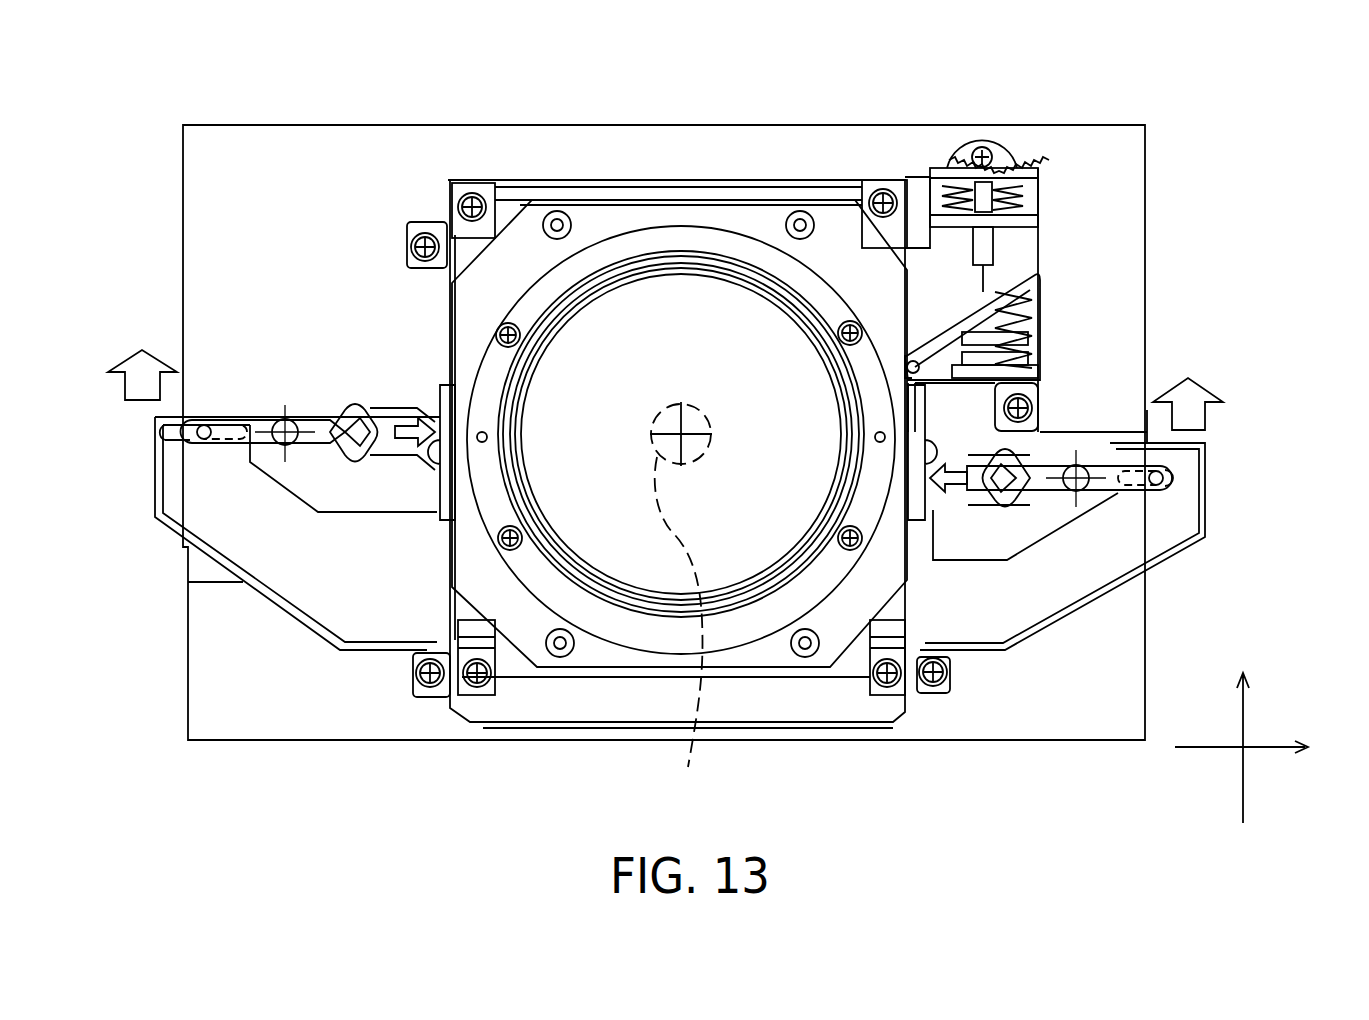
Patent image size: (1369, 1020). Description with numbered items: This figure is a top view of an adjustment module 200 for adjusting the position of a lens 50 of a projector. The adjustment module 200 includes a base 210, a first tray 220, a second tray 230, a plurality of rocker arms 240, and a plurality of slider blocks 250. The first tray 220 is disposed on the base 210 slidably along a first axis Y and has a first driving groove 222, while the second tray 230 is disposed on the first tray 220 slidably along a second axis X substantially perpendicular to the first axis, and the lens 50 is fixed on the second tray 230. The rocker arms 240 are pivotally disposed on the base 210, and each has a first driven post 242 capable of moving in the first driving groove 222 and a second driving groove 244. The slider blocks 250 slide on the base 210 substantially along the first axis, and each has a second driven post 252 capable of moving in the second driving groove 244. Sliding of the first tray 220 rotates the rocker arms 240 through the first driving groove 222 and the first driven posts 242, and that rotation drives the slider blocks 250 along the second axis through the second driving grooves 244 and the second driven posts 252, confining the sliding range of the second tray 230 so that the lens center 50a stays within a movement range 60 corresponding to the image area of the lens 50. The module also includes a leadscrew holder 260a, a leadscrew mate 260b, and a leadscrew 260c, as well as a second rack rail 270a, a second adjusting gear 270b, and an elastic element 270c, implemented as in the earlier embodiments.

The adjustment module 200 is at (1089, 783).
The base 210 is at (1115, 197).
The first tray 220 is at (878, 707).
The first driving groove 222 is at (1193, 470).
The second tray 230 is at (787, 657).
The rocker arms 240 is at (1190, 513).
The first driven post 242 is at (1180, 460).
The second driving groove 244 is at (1020, 465).
The slider blocks 250 is at (958, 490).
The second driven post 252 is at (1025, 465).
The leadscrew holder 260a is at (1043, 367).
The leadscrew mate 260b is at (1040, 322).
The leadscrew 260c is at (1040, 293).
The second rack rail 270a is at (1033, 172).
The second adjusting gear 270b is at (984, 128).
The elastic element 270c is at (1040, 198).
The lens 50 is at (628, 563).
The lens center 50a is at (700, 423).
The moving path 60 is at (679, 636).